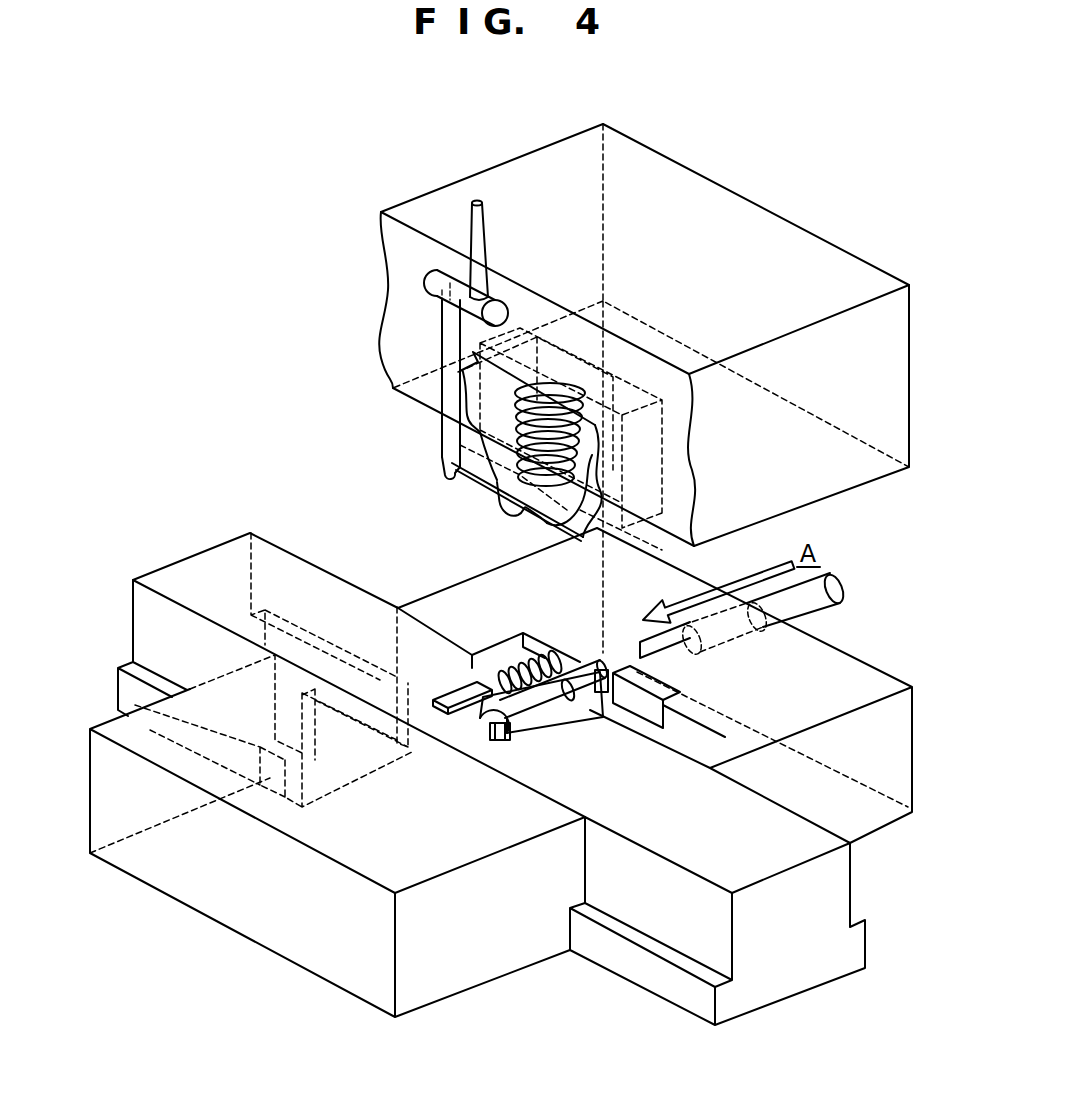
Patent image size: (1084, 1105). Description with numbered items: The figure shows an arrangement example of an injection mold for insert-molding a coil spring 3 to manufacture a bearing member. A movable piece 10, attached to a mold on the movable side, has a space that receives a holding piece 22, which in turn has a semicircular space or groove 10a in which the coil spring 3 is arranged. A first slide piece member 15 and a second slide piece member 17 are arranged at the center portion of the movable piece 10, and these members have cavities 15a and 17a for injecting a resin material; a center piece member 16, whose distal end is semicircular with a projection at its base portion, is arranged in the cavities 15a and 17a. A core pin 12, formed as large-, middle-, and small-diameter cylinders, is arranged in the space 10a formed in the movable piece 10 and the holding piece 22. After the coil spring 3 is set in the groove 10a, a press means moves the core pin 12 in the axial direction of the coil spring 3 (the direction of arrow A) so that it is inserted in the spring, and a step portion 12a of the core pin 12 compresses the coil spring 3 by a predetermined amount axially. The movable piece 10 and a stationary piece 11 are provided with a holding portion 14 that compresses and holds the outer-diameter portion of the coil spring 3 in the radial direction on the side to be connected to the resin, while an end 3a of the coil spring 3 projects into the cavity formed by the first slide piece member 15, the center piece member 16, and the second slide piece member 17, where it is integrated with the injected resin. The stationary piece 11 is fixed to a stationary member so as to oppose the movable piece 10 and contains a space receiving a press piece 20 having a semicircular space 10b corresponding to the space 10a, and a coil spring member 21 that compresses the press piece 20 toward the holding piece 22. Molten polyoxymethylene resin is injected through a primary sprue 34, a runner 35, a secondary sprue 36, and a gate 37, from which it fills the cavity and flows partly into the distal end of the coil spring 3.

The coil spring 3 is at (523, 657).
The end of the coil spring 3a is at (510, 665).
The movable piece 10 is at (810, 707).
The space (groove) 10a is at (562, 712).
The semicircular space 10b is at (520, 512).
The stationary piece 11 is at (690, 182).
The core pin 12 is at (833, 590).
The step portion 12a is at (593, 657).
The holding portion 14 is at (508, 730).
The first slide piece member 15 is at (205, 563).
The cavity 15a is at (397, 647).
The center piece member 16 is at (455, 735).
The second slide piece member 17 is at (770, 867).
The cavity 17a is at (520, 738).
The press piece 20 is at (505, 466).
The coil spring member 21 is at (550, 385).
The holding piece 22 is at (640, 707).
The primary sprue 34 is at (476, 218).
The runner 35 is at (438, 280).
The secondary sprue 36 is at (447, 350).
The gate 37 is at (446, 478).